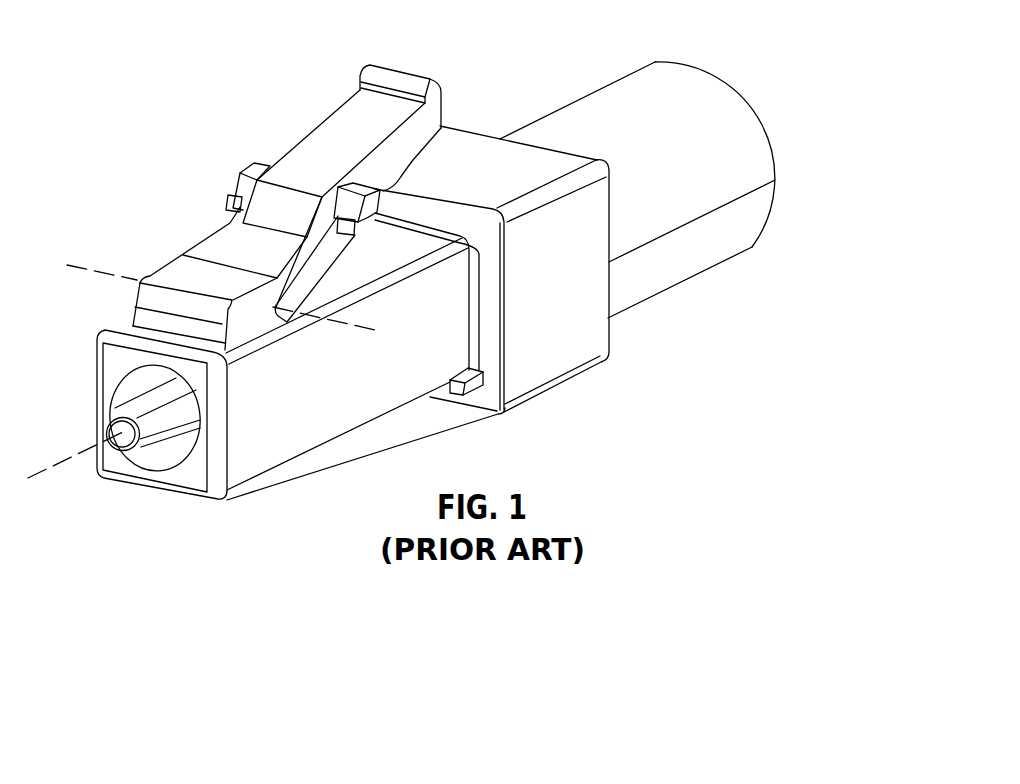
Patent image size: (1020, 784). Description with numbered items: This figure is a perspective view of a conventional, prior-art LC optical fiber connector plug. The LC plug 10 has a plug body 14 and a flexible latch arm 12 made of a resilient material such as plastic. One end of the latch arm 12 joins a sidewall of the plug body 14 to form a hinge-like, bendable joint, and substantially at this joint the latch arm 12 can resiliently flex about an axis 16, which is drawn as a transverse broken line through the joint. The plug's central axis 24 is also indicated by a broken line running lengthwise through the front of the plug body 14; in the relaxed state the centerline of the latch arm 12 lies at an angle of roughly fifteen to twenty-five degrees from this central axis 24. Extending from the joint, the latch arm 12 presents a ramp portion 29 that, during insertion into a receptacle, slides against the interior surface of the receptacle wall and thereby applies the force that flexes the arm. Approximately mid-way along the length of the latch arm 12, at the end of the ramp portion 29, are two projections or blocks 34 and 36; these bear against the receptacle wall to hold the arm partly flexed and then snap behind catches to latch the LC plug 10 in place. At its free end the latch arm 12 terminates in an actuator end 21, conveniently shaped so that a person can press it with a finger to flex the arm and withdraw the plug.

The LC plug 10 is at (93, 59).
The latch arm 12 is at (326, 80).
The plug body 14 is at (283, 468).
The axis 16 is at (100, 273).
The actuator end 21 is at (417, 73).
The central axis 24 is at (56, 465).
The ramp portion 29 is at (241, 186).
The block 34 is at (368, 186).
The block 36 is at (268, 165).